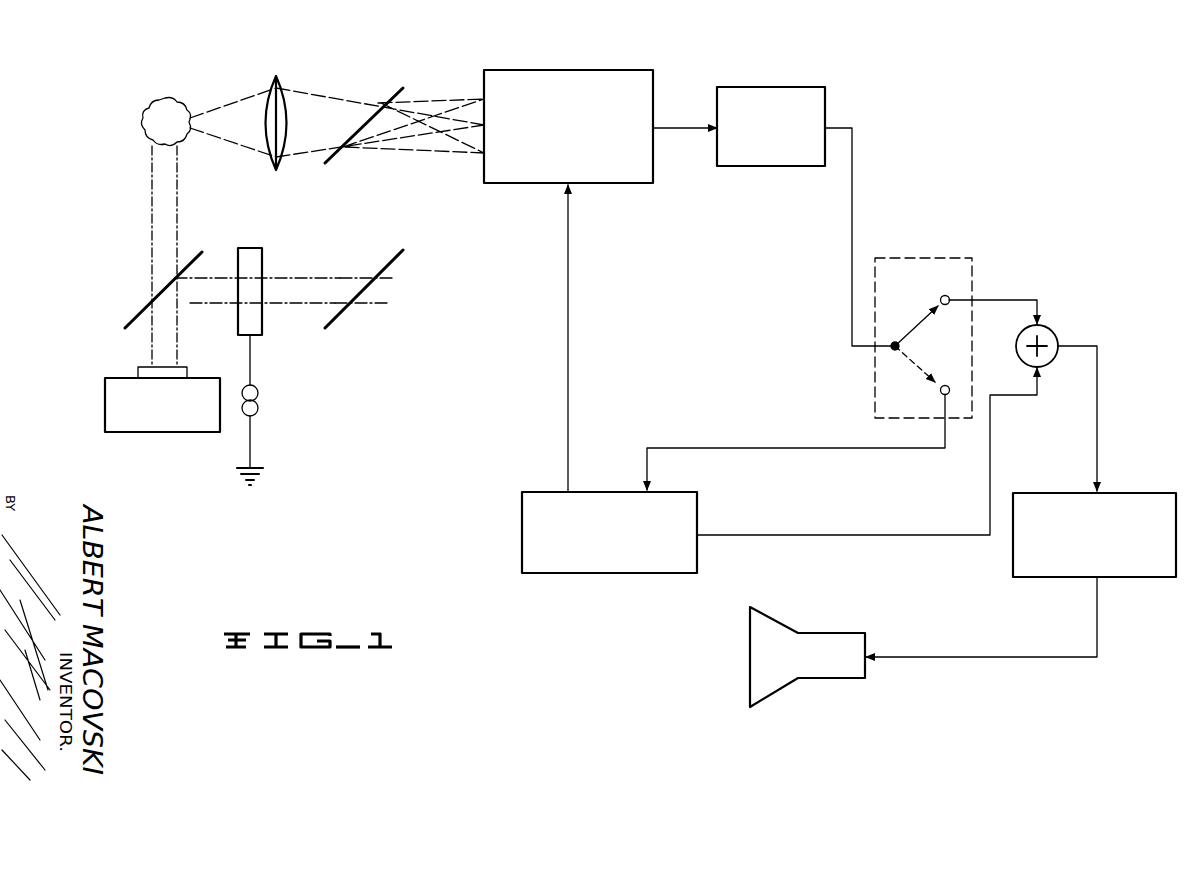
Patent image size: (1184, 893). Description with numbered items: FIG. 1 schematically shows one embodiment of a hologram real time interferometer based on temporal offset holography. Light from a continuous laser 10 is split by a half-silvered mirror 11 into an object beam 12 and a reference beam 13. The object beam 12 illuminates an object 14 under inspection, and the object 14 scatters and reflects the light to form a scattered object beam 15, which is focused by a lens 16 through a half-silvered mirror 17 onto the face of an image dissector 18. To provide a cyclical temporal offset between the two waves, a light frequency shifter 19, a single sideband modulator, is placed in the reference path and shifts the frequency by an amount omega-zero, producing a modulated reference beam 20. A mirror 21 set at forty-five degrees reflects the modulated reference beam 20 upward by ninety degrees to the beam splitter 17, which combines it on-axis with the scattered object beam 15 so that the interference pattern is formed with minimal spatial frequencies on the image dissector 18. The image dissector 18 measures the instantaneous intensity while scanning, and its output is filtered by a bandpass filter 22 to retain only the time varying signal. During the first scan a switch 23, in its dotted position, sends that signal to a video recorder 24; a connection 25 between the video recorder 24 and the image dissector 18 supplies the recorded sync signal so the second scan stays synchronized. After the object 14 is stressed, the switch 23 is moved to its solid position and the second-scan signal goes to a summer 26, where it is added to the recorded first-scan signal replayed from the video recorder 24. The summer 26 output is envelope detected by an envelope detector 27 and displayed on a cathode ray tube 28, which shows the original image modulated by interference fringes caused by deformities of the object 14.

The continuous laser 10 is at (105, 405).
The half-silvered mirror 11 is at (128, 318).
The object beam 12 is at (208, 305).
The reference beam 13 is at (152, 232).
The object 14 is at (152, 98).
The scattered object beam 15 is at (232, 100).
The lens 16 is at (284, 92).
The half-silvered mirror 17 is at (392, 90).
The image dissector 18 is at (490, 70).
The light frequency shifter 19 is at (254, 248).
The modulated reference beam 20 is at (306, 278).
The mirror 21 is at (398, 256).
The bandpass filter 22 is at (755, 87).
The switch 23 is at (912, 258).
The video recorder 24 is at (522, 528).
The connection 25 is at (570, 296).
The summer 26 is at (1052, 330).
The envelope detector 27 is at (1125, 493).
The cathode ray tube 28 is at (750, 652).